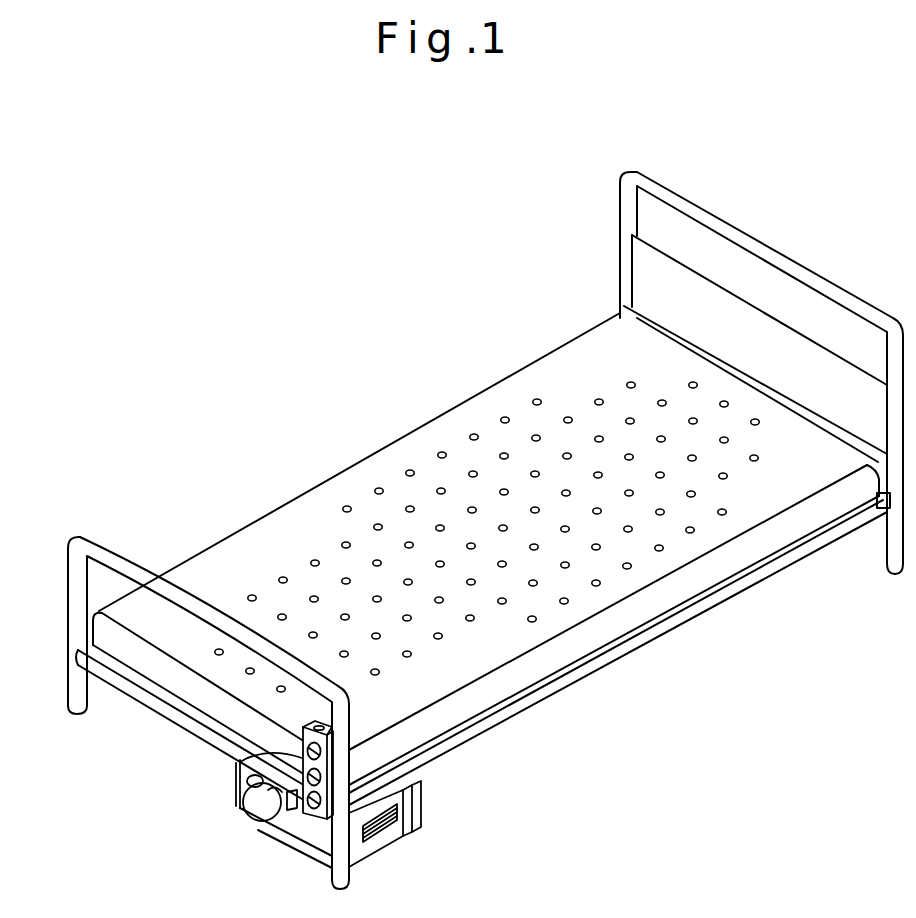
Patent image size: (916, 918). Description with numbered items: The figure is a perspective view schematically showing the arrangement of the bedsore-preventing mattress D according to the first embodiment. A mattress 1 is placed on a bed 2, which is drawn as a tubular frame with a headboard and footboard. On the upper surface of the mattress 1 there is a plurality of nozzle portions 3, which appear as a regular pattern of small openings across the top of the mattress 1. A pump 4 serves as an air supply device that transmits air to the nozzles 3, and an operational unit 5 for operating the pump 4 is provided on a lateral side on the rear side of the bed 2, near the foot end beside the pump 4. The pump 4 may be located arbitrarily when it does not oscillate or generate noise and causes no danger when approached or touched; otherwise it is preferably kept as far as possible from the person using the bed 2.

The mattress 1 is at (240, 534).
The bed 2 is at (840, 287).
The nozzle portions 3 is at (533, 623).
The pump 4 is at (421, 818).
The operational unit 5 is at (240, 761).
The bedsore-preventing mattress D is at (306, 373).